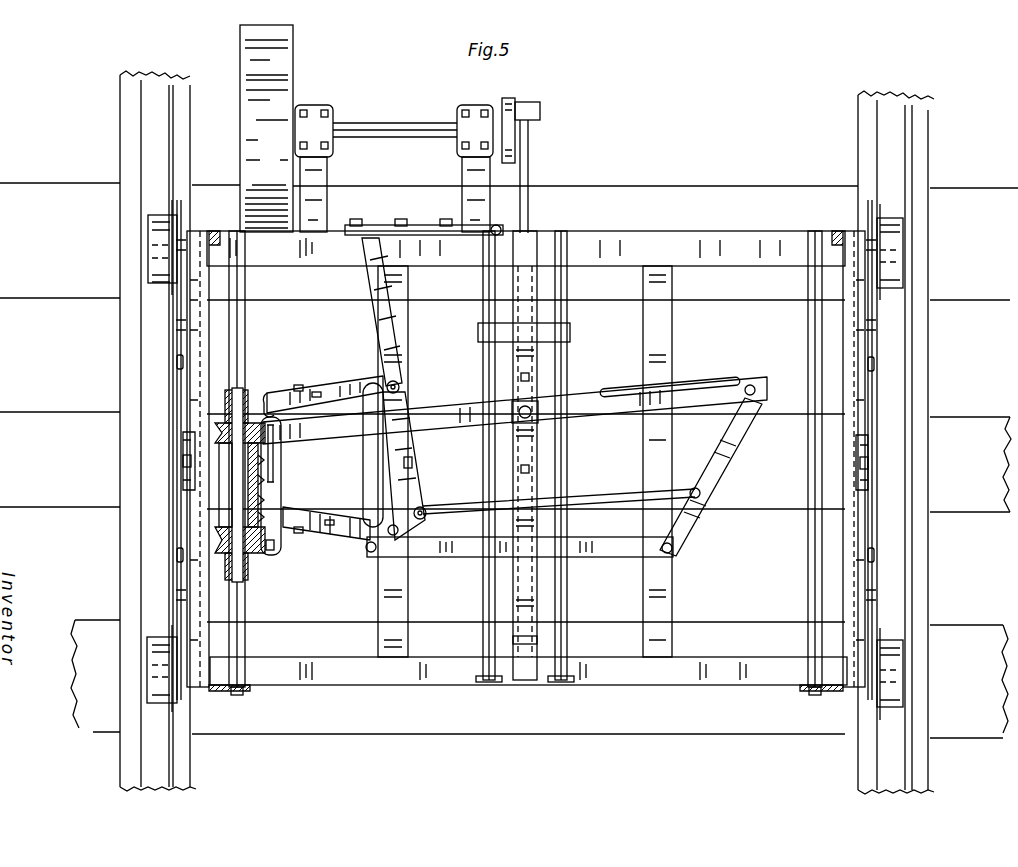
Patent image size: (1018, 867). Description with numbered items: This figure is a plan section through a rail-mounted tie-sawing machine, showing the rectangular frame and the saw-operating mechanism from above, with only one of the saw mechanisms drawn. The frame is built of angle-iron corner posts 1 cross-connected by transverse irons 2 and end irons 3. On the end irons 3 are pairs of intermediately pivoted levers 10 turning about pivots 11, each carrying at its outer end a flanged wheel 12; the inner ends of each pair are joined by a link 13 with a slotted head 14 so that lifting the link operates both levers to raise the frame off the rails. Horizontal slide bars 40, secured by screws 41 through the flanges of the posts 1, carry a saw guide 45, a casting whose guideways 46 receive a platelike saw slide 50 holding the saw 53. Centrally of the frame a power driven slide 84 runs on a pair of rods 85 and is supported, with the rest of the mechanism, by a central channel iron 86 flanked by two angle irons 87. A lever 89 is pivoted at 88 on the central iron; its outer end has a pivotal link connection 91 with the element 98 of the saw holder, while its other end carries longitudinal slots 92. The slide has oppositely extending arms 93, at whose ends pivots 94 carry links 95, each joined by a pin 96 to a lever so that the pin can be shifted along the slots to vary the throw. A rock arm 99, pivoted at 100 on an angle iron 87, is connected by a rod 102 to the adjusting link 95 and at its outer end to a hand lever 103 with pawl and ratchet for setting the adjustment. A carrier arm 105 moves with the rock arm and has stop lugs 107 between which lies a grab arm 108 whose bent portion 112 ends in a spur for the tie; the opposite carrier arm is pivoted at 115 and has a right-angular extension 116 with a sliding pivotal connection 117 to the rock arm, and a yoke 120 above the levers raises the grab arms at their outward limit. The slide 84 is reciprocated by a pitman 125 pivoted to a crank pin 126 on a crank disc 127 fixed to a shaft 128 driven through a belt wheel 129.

The corner post 1 is at (208, 230).
The transverse iron 2 is at (708, 243).
The end iron 3 is at (197, 330).
The intermediately pivoted lever 10 is at (180, 320).
The pivot 11 is at (177, 362).
The flanged wheel 12 is at (148, 222).
The link 13 is at (185, 464).
The head 14 is at (180, 446).
The slide bar 40 is at (247, 320).
The screw 41 is at (242, 694).
The saw guide 45 is at (270, 552).
The guideway 46 is at (220, 430).
The saw slide 50 is at (245, 520).
The saw 53 is at (250, 484).
The power driven slide 84 is at (556, 560).
The rod 85 is at (483, 314).
The channel iron 86 is at (540, 641).
The angle iron 87 is at (673, 337).
The pivot 88 is at (548, 420).
The lever 89 is at (451, 410).
The pivotal link connection 91 is at (281, 460).
The slot 92 is at (720, 383).
The arm 93 is at (460, 557).
The pivot 94 is at (672, 550).
The link 95 is at (730, 456).
The pin 96 is at (753, 385).
The element 98 is at (283, 492).
The rock arm 99 is at (369, 332).
The pivot 100 is at (399, 385).
The rod 102 is at (615, 495).
The hand lever 103 is at (440, 225).
The carrier arm 105 is at (333, 392).
The stop lug 107 is at (298, 385).
The grab arm 108 is at (316, 392).
The bent portion 112 is at (278, 393).
The pivot 115 is at (397, 528).
The right-angular extension 116 is at (421, 510).
The sliding pivotal connection 117 is at (412, 465).
The yoke 120 is at (363, 478).
The pitman 125 is at (530, 160).
The crank pin 126 is at (541, 109).
The crank disc 127 is at (509, 98).
The shaft 128 is at (370, 122).
The belt wheel 129 is at (290, 63).